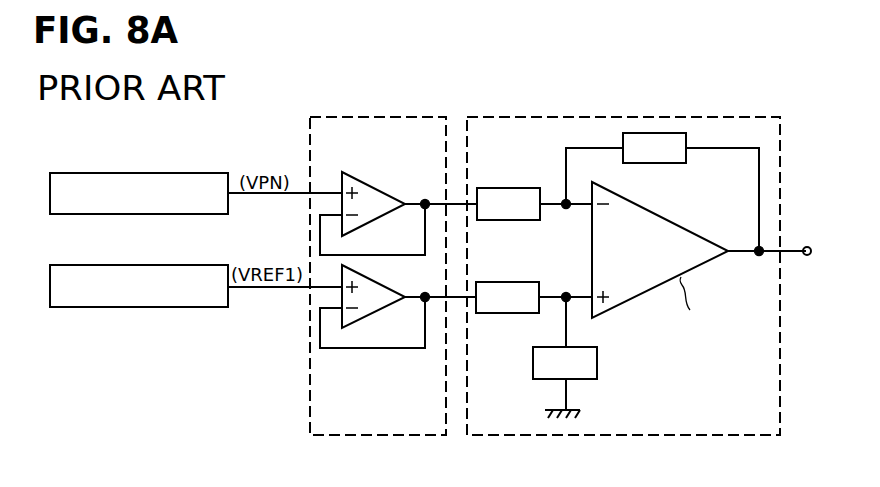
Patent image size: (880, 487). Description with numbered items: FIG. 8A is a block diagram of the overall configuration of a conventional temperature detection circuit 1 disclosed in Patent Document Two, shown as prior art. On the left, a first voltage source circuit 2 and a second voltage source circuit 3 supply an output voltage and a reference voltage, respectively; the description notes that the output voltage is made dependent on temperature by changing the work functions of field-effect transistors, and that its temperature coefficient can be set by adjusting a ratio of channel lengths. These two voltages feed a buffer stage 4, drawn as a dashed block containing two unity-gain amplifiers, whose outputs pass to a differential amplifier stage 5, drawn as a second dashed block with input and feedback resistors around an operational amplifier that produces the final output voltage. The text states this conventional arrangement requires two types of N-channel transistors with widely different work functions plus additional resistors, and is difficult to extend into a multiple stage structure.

The amplifier circuit 1 is at (510, 74).
The first voltage source circuit 2 is at (95, 173).
The second voltage source circuit 3 is at (96, 265).
The buffer circuit 4 is at (378, 115).
The differential amplifier circuit 5 is at (575, 115).